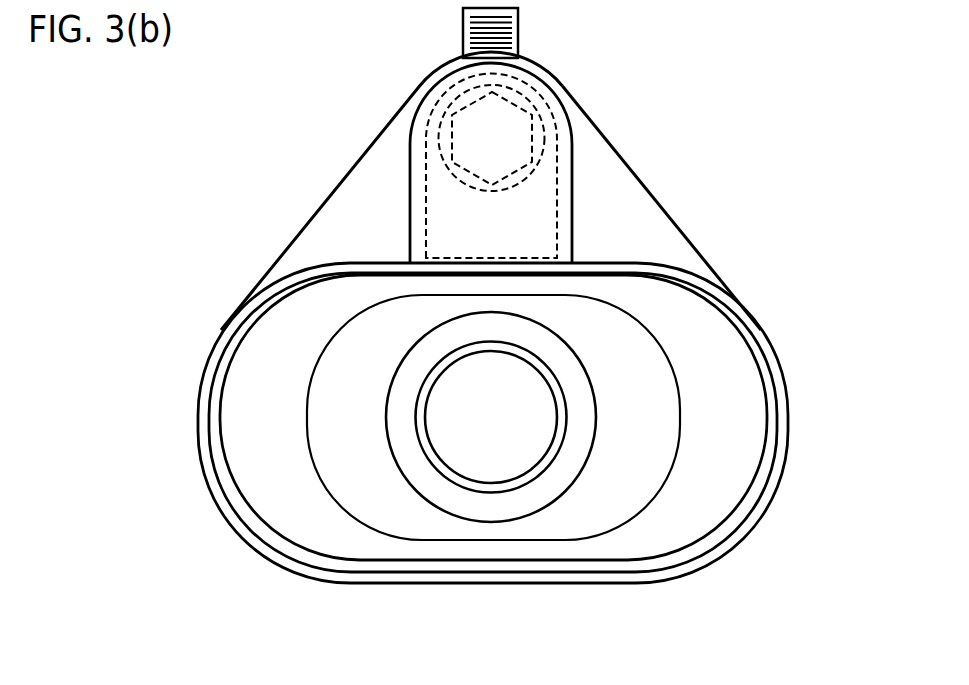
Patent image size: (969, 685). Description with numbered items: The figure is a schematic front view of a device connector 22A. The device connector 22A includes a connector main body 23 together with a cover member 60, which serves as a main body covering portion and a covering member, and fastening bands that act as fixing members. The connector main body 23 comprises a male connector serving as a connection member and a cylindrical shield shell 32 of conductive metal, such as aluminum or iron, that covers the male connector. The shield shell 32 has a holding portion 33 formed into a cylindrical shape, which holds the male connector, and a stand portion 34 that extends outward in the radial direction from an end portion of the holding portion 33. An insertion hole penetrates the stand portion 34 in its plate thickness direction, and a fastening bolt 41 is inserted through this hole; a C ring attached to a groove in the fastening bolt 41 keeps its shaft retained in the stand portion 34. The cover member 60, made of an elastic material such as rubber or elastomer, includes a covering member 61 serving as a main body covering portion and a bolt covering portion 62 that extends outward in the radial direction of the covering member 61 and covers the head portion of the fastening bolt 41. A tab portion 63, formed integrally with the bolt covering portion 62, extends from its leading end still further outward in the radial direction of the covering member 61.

The device connector 22A is at (798, 108).
The connector main body 23 is at (688, 232).
The shield shell 32 is at (737, 292).
The holding portion 33 is at (780, 393).
The stand portion 34 is at (660, 193).
The fastening bolt 41 is at (535, 132).
The cover member 60 is at (383, 232).
The covering member 61 is at (737, 358).
The bolt covering portion 62 is at (574, 147).
The tab portion 63 is at (519, 27).